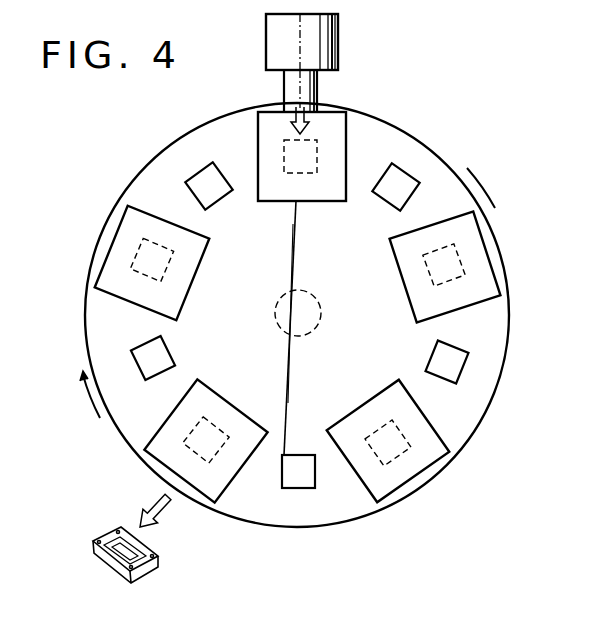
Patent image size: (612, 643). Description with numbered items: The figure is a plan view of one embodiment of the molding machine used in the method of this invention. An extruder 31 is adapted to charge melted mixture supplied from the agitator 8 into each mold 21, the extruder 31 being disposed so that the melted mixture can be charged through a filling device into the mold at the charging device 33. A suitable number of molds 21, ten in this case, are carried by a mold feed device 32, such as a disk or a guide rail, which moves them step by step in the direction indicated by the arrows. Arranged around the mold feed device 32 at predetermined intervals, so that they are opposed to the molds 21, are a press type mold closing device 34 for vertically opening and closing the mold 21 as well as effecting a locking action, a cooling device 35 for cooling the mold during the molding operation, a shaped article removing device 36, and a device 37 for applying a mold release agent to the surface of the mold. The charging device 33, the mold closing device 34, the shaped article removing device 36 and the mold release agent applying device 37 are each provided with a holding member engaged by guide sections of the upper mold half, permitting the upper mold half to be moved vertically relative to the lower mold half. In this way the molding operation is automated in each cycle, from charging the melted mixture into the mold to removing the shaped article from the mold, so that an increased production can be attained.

The agitator 8 is at (329, 42).
The mold 21 is at (285, 160).
The extruder 31 is at (316, 91).
The mold feed device 32 is at (294, 315).
The charging device 33 is at (338, 145).
The mold closing device 34 is at (477, 248).
The cooling device 35 is at (418, 468).
The shaped article removing device 36 is at (160, 442).
The mold release agent applying device 37 is at (117, 250).